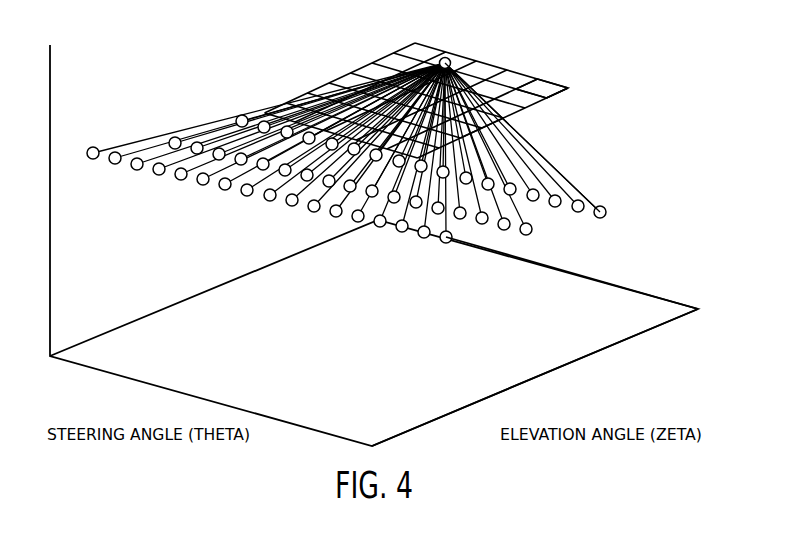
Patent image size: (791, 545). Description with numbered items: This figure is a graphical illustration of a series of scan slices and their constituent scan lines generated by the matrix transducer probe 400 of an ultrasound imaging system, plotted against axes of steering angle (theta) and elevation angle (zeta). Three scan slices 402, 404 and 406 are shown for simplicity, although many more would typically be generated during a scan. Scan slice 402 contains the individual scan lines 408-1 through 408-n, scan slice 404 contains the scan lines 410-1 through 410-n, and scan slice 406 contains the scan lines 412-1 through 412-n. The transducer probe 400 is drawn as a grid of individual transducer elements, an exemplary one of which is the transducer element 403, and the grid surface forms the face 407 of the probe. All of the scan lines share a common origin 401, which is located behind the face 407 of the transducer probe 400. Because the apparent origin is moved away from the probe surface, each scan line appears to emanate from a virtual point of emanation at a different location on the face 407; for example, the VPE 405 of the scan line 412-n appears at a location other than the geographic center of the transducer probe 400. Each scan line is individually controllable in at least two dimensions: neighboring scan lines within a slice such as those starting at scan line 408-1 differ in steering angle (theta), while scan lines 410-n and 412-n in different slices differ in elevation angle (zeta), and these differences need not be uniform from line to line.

The matrix transducer probe 400 is at (494, 67).
The origin 401 is at (450, 58).
The scan slice 402 is at (572, 273).
The transducer element 403 is at (569, 84).
The scan slice 404 is at (535, 349).
The virtual point of emanation (VPE) 405 is at (513, 124).
The scan slice 406 is at (561, 163).
The face of the transducer probe 407 is at (562, 99).
The scan line 408-1 is at (92, 146).
The scan line 408-n is at (446, 244).
The scan line 410-1 is at (176, 136).
The scan line 410-n is at (533, 228).
The scan line 412-1 is at (241, 114).
The scan line 412-n is at (607, 212).